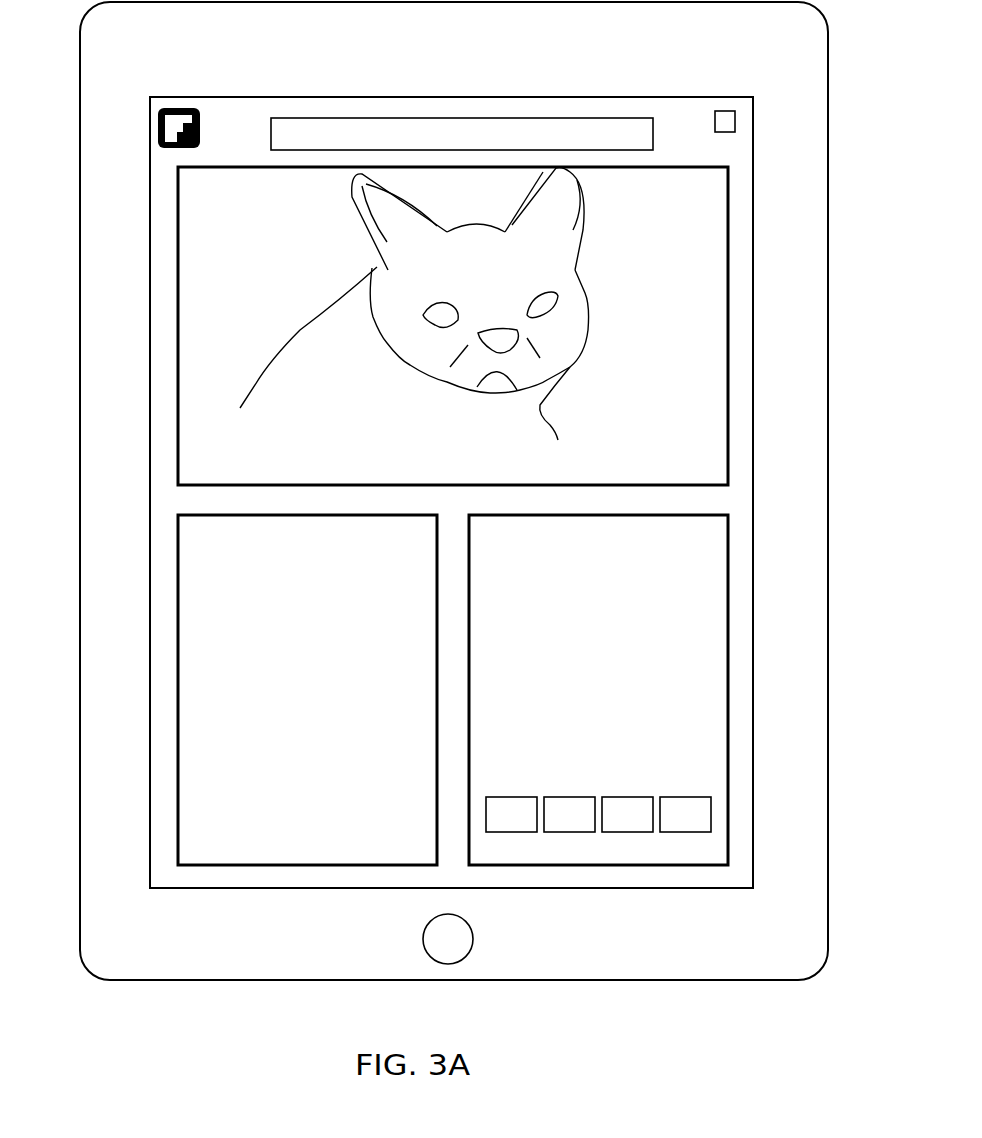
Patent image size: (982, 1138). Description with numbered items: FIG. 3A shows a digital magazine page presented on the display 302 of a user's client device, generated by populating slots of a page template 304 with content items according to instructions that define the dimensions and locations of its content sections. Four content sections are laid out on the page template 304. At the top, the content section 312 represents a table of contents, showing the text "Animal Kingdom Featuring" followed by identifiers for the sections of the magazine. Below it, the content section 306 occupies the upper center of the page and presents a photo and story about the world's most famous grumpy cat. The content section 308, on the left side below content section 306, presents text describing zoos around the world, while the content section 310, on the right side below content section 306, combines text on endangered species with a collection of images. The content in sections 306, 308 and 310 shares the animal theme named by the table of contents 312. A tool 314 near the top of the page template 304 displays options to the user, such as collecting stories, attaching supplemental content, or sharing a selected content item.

The display 302 is at (270, 980).
The page template 304 is at (605, 97).
The content section 306 is at (178, 325).
The content section 308 is at (178, 690).
The content section 310 is at (598, 866).
The content section 312 is at (385, 115).
The tool 314 is at (726, 125).